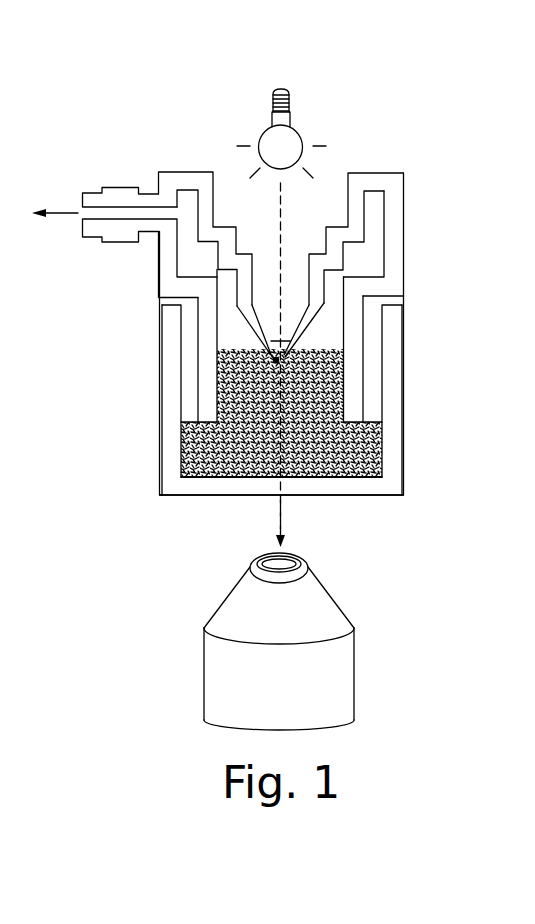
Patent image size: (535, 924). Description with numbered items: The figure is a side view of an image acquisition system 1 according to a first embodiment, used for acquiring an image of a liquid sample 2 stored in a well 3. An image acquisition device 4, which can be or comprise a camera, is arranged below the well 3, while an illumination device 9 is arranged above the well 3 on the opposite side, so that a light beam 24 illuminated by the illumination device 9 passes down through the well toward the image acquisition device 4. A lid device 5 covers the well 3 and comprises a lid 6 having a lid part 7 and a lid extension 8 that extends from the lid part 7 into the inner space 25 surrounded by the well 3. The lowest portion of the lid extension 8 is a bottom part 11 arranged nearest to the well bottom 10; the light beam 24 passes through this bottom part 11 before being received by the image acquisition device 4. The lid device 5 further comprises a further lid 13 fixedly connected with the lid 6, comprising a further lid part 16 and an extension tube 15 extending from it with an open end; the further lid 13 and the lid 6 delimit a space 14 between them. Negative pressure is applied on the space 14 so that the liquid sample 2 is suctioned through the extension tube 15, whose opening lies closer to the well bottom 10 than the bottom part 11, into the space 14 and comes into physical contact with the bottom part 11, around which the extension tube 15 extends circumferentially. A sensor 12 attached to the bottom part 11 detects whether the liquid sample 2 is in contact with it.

The image acquisition system 1 is at (139, 92).
The liquid sample 2 is at (213, 463).
The well 3 is at (177, 474).
The image acquisition device 4 is at (227, 683).
The lid device 5 is at (119, 165).
The lid 6 is at (199, 154).
The lid part 7 is at (377, 180).
The lid extension 8 is at (318, 275).
The illumination device 9 is at (290, 140).
The well bottom 10 is at (325, 488).
The bottom part 11 is at (280, 359).
The sensor 12 is at (273, 357).
The further lid 13 is at (127, 257).
The space 14 is at (230, 334).
The extension tube 15 is at (208, 395).
The further lid part 16 is at (373, 290).
The light beam 24 is at (270, 517).
The inner space 25 is at (372, 402).